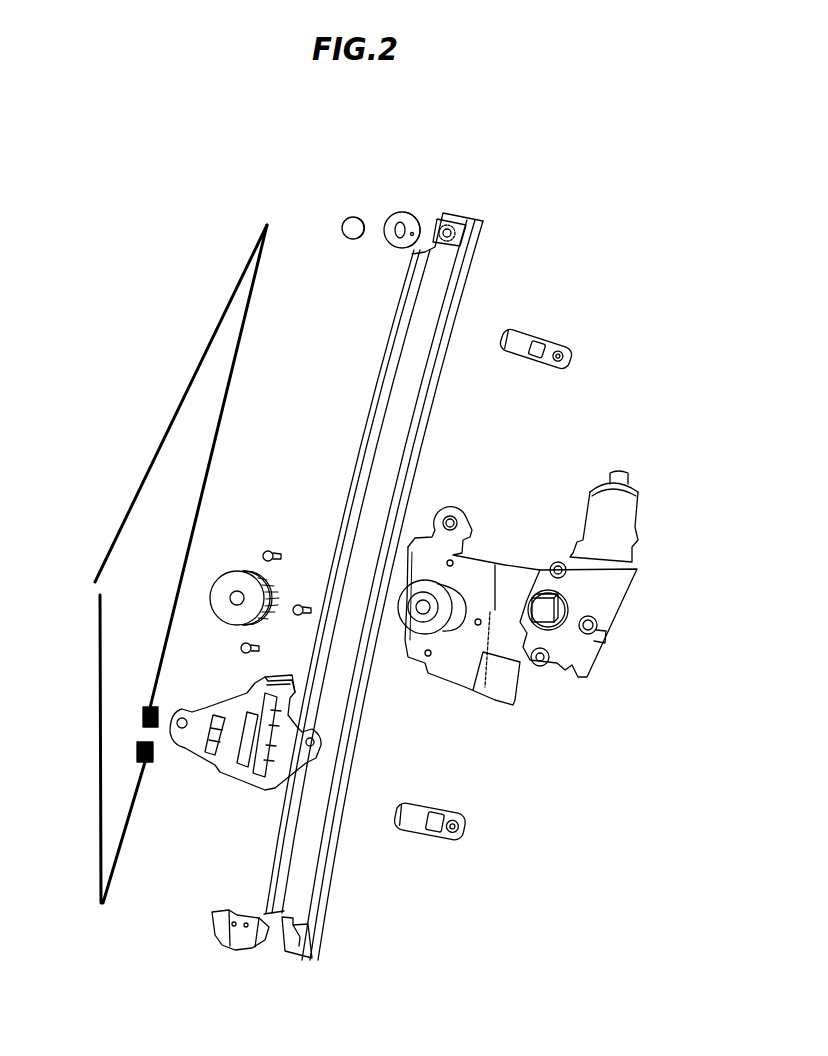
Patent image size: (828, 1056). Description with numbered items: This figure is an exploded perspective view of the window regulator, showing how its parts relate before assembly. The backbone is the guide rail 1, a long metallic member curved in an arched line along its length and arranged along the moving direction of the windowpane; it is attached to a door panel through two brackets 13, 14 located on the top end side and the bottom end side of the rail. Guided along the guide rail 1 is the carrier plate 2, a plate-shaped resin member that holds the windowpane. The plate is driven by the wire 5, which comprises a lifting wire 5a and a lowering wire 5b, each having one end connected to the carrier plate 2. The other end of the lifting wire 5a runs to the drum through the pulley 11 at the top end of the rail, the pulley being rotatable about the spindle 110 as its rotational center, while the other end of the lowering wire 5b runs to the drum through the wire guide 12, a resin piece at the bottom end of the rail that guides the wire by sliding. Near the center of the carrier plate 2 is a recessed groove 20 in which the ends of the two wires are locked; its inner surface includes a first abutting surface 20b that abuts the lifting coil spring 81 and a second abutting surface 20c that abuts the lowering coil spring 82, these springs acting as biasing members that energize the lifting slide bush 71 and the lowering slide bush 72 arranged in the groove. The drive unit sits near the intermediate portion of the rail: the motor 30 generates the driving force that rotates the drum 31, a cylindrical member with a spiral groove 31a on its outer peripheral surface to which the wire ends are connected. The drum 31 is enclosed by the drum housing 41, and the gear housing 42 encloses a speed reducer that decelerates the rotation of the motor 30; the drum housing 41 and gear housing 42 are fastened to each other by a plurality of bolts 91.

The guide rail 1 is at (446, 268).
The carrier plate 2 is at (245, 743).
The wire 5 is at (141, 564).
The lifting wire 5a is at (111, 548).
The lowering wire 5b is at (97, 606).
The pulley 11 is at (406, 222).
The spindle 110 is at (353, 217).
The wire guide 12 is at (240, 938).
The bracket 13 is at (520, 337).
The bracket 14 is at (462, 826).
The recessed groove 20 is at (245, 733).
The first abutting surface 20b is at (256, 693).
The second abutting surface 20c is at (238, 762).
The motor 30 is at (632, 507).
The drum 31 is at (231, 587).
The spiral groove 31a is at (254, 572).
The drum housing 41 is at (494, 529).
The gear housing 42 is at (653, 576).
The lifting slide bush 71 is at (143, 718).
The lowering slide bush 72 is at (154, 760).
The lifting coil spring 81 is at (132, 690).
The lowering coil spring 82 is at (120, 778).
The bolts 91 is at (305, 604).